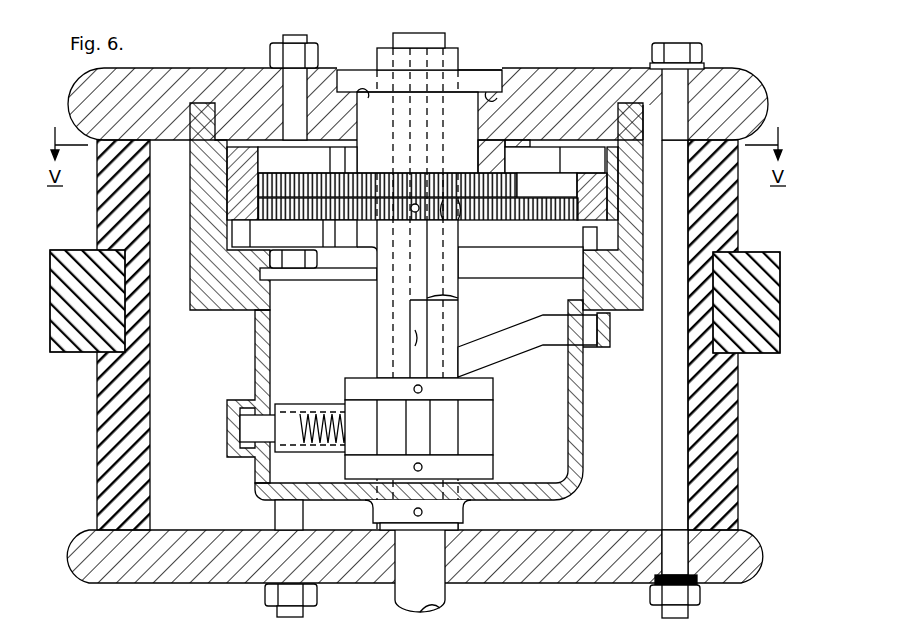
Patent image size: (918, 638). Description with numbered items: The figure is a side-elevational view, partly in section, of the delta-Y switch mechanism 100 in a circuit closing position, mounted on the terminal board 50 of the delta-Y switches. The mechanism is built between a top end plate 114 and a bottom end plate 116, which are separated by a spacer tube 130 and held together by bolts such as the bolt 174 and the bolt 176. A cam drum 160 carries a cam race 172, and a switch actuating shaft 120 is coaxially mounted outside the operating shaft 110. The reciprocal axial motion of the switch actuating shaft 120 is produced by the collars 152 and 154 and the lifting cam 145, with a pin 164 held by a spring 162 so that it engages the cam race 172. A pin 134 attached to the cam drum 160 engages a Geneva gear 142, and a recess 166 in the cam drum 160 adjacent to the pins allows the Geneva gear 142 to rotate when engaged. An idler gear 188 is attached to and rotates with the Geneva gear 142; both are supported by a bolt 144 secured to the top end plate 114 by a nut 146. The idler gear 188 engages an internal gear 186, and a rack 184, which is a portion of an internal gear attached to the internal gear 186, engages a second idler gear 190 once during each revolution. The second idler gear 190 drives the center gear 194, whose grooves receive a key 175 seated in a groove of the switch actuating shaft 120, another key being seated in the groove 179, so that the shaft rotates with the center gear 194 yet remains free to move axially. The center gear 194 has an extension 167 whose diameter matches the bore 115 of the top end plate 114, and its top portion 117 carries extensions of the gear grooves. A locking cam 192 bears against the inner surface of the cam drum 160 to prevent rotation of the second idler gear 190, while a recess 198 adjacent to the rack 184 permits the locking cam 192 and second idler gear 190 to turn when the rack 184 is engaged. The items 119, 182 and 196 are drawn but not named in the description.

The delta-Y switch mechanism 100 is at (568, 614).
The operating shaft 110 is at (445, 42).
The top end plate 114 is at (750, 79).
The bore 115 is at (419, 82).
The bottom end plate 116 is at (750, 578).
The top portion 117 is at (466, 78).
The recess 119 is at (494, 93).
The switch actuating shaft 120 is at (377, 307).
The spacer tube 130 is at (740, 490).
The pin 134 is at (583, 238).
The Geneva gear 142 is at (372, 250).
The bolt 144 is at (295, 268).
The lifting cam 145 is at (495, 430).
The nut 146 is at (283, 49).
The collar 152 is at (495, 388).
The collar 154 is at (495, 466).
The cam drum 160 is at (262, 480).
The spring 162 is at (316, 406).
The pin 164 is at (240, 408).
The recess 166 is at (645, 250).
The extension 167 is at (474, 132).
The cam race 172 is at (510, 330).
The bolt 174 is at (695, 49).
The key 175 is at (458, 298).
The bolt 176 is at (274, 515).
The groove 179 is at (412, 337).
The bottom bearing block 182 is at (466, 526).
The rack 184 is at (570, 186).
The internal gear 186 is at (498, 224).
The idler gear 188 is at (306, 222).
The second idler gear 190 is at (282, 170).
The locking cam 192 is at (225, 157).
The center gear 194 is at (455, 215).
The washer 196 is at (486, 72).
The recess 198 is at (568, 161).
The terminal board 50 is at (55, 345).